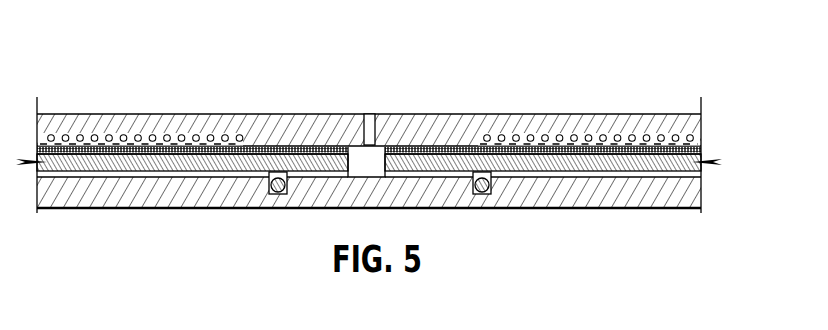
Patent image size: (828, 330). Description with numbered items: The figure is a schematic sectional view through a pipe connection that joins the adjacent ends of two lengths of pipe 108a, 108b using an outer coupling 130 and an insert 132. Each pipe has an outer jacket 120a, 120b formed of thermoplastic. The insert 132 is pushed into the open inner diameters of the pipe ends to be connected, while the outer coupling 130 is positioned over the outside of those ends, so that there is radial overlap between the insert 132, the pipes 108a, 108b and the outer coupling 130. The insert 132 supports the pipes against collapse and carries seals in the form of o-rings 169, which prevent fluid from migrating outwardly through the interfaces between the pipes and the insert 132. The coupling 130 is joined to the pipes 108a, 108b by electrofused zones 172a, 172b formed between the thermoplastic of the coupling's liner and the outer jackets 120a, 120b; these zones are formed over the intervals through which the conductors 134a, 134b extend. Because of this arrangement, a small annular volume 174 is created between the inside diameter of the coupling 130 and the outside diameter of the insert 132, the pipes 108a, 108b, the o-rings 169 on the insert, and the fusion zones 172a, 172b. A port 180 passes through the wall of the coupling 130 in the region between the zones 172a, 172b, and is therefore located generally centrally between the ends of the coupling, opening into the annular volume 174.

The outer coupling 130 is at (478, 119).
The conductor 134a is at (163, 138).
The conductor 134b is at (546, 139).
The electrofused zone 172a is at (111, 138).
The electrofused zone 172b is at (633, 142).
The pipe 108a is at (311, 155).
The pipe 108b is at (580, 158).
The outer jacket 120a is at (260, 150).
The outer jacket 120b is at (412, 148).
The annular volume 174 is at (362, 152).
The port 180 is at (371, 117).
The insert 132 is at (565, 190).
The o-rings 169 is at (276, 196).